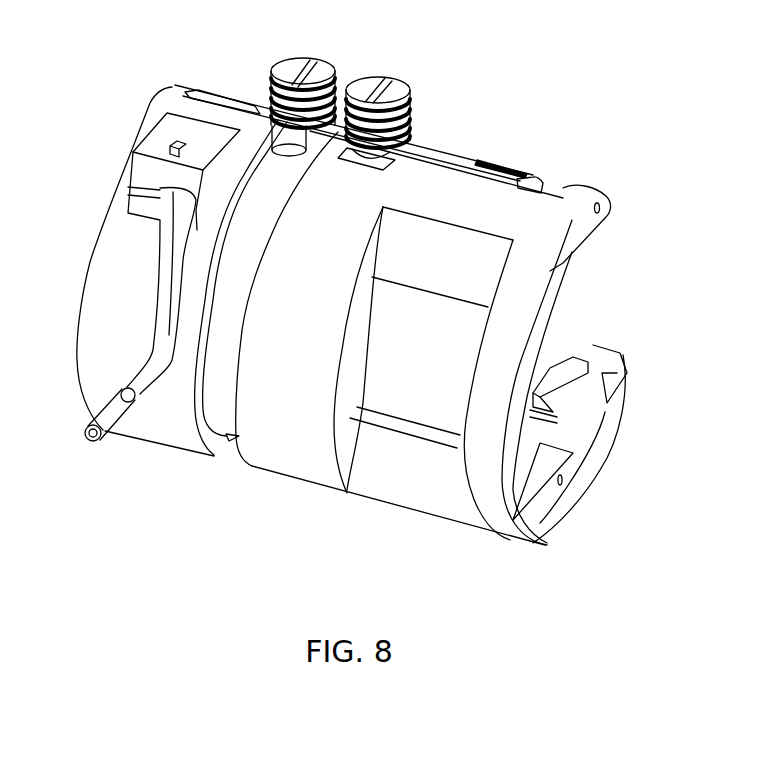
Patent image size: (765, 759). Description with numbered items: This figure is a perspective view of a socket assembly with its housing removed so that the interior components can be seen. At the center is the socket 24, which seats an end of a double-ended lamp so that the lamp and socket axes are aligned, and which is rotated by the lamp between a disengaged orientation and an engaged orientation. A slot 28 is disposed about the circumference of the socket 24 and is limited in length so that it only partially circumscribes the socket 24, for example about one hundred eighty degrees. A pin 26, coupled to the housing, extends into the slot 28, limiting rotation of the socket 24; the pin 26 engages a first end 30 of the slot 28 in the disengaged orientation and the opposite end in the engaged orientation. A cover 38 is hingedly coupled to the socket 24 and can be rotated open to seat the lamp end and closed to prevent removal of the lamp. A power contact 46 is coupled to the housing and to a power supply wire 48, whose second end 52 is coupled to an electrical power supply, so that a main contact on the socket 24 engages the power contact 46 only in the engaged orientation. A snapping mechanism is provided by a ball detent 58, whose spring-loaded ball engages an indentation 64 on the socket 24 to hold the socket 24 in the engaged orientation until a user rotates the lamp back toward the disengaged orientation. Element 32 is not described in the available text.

The socket 24 is at (545, 213).
The pin 26 is at (268, 80).
The slot 28 is at (257, 207).
The first end of the slot 30 is at (330, 125).
The notch 32 is at (229, 440).
The cover 38 is at (592, 455).
The power contact 46 is at (160, 135).
The power supply wire 48 is at (163, 308).
The second end of the power supply wire 52 is at (90, 437).
The ball detent 58 is at (408, 145).
The indentation 64 is at (415, 150).